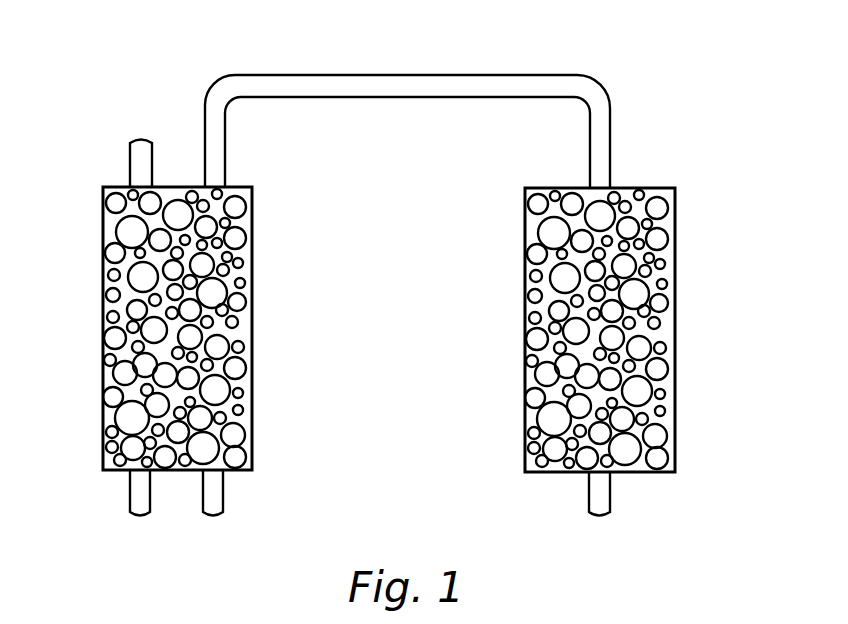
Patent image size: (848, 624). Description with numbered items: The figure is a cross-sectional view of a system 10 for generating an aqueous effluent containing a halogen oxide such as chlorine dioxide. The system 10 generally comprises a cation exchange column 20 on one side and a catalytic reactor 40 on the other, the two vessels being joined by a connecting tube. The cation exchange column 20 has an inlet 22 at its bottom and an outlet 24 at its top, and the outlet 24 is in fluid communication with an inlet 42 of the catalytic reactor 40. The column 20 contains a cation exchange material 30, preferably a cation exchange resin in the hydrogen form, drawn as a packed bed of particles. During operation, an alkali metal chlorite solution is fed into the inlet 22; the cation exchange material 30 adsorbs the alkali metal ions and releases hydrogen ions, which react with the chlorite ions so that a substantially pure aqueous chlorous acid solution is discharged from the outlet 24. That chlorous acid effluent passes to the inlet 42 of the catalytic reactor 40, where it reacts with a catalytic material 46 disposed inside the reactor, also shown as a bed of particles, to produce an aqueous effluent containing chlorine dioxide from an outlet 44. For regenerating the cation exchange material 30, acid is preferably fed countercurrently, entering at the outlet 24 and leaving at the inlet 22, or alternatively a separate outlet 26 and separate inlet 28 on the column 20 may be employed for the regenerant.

The system 10 is at (112, 68).
The cation exchange column 20 is at (270, 309).
The inlet 22 is at (224, 481).
The outlet 24 is at (226, 178).
The separate outlet 26 is at (129, 160).
The separate inlet 28 is at (129, 481).
The cation exchange material 30 is at (106, 295).
The catalytic reactor 40 is at (697, 297).
The inlet 42 is at (613, 178).
The outlet 44 is at (611, 491).
The catalytic material 46 is at (530, 362).